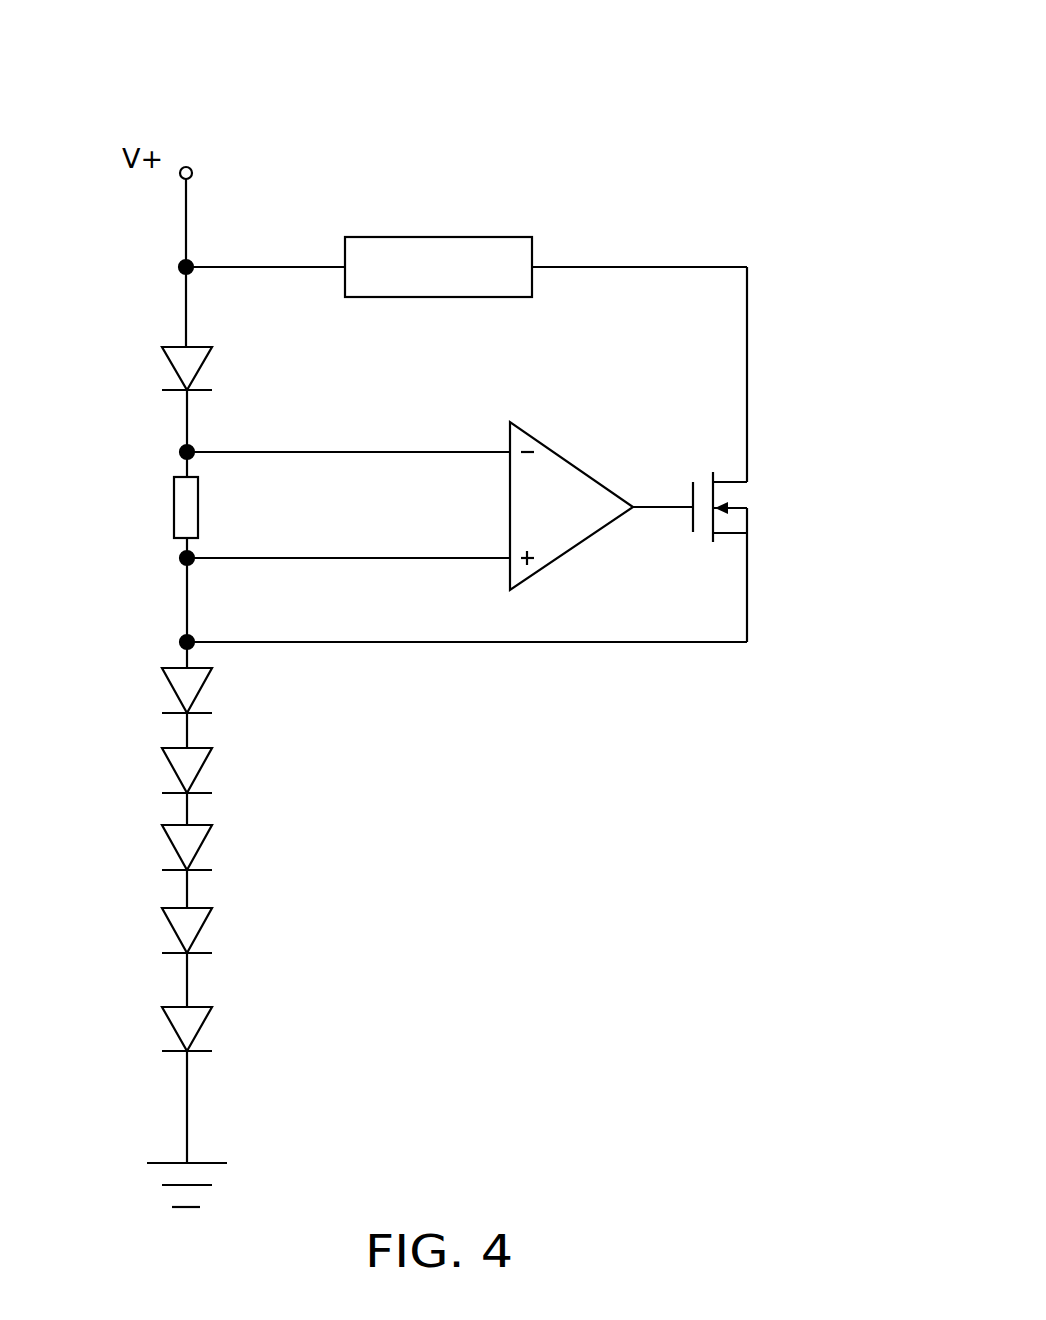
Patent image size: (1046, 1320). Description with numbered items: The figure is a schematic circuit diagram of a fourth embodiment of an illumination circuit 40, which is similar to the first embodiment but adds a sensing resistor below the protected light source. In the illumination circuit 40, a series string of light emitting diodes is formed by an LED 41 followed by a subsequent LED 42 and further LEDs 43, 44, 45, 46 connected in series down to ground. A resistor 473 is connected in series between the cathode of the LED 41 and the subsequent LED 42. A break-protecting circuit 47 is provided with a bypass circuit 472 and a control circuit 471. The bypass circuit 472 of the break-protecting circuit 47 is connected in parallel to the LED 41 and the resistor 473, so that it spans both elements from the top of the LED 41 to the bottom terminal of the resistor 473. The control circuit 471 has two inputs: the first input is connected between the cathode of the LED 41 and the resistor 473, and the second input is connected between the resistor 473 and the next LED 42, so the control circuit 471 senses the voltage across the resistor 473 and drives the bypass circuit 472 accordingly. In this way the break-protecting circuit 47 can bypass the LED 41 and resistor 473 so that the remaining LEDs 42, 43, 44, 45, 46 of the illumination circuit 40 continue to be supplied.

The illumination circuit 40 is at (447, 56).
The LED 41 is at (173, 369).
The subsequent LED 42 is at (173, 692).
The third light emitting diode 43 is at (173, 767).
The fourth light emitting diode 44 is at (173, 847).
The fifth light emitting diode 45 is at (173, 928).
The sixth light emitting diode 46 is at (173, 1025).
The break-protecting circuit 47 is at (591, 241).
The control circuit 471 is at (557, 450).
The bypass circuit 472 is at (738, 505).
The resistor 473 is at (178, 502).